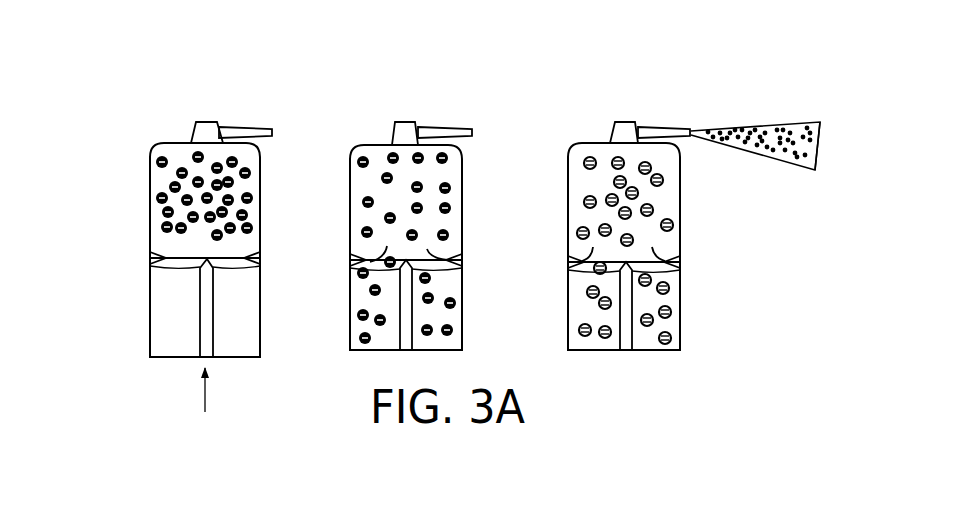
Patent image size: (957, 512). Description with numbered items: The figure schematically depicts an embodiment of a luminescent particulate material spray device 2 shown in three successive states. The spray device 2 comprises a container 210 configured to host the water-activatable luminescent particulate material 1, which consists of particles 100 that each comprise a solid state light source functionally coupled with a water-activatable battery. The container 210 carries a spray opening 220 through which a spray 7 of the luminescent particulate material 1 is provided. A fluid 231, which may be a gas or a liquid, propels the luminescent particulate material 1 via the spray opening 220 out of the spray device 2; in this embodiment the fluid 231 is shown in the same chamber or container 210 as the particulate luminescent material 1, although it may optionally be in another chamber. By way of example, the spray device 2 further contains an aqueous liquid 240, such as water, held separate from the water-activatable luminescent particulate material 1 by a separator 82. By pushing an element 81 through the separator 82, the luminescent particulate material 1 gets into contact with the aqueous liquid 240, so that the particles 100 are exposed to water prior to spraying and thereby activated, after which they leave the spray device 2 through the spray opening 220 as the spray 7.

The luminescent particulate material spray device 2 is at (462, 226).
The water-activatable luminescent particulate material 1 is at (182, 170).
The spray opening 220 is at (273, 131).
The container 210 is at (140, 196).
The fluid 231 is at (158, 236).
The separator 82 is at (230, 256).
The aqueous liquid 240 is at (162, 318).
The element 81 is at (212, 332).
The particles 100 is at (783, 130).
The spray 7 is at (827, 121).